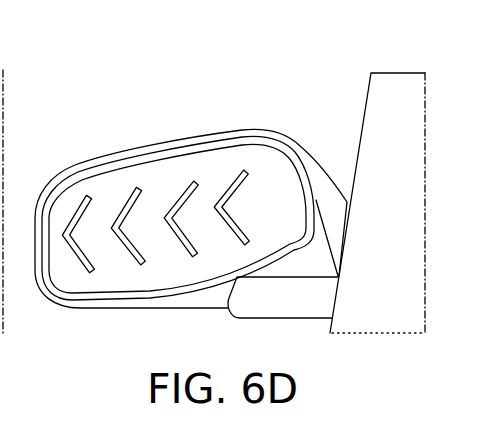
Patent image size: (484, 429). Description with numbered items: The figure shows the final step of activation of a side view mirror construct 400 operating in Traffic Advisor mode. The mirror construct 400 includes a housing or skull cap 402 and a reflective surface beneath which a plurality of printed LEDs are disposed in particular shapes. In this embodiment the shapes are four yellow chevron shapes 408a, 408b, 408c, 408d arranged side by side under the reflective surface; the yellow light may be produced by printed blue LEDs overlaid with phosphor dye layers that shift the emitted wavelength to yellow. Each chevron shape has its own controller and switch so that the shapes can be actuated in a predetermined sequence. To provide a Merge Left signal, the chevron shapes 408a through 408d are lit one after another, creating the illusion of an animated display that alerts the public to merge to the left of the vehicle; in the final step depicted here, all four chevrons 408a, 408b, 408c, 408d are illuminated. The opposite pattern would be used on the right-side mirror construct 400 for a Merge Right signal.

The side view mirror construct 400 is at (112, 104).
The housing or skull cap 402 is at (233, 130).
The yellow chevron shape 408a is at (88, 273).
The yellow chevron shape 408b is at (140, 264).
The yellow chevron shape 408c is at (192, 182).
The yellow chevron shape 408d is at (244, 245).